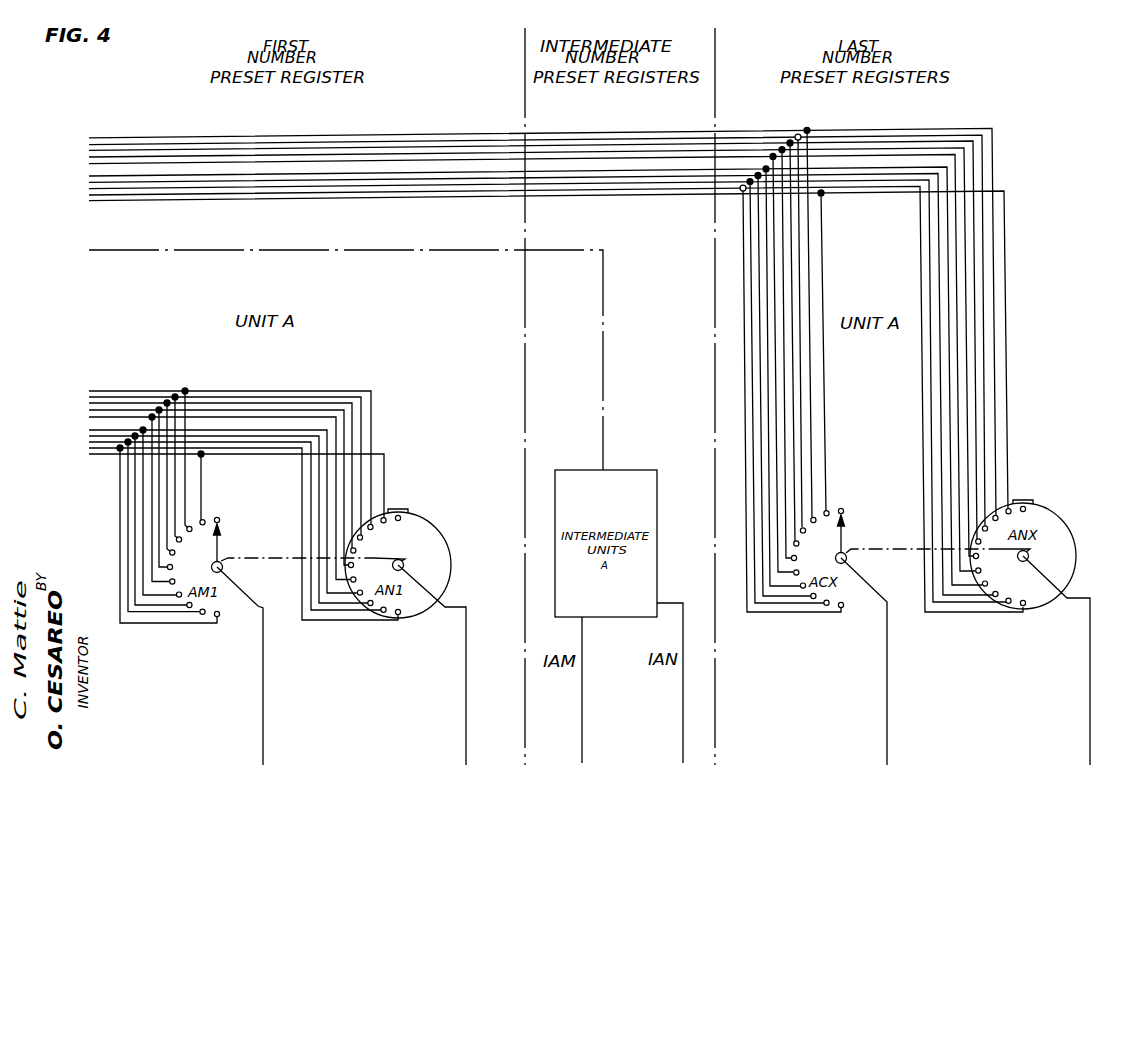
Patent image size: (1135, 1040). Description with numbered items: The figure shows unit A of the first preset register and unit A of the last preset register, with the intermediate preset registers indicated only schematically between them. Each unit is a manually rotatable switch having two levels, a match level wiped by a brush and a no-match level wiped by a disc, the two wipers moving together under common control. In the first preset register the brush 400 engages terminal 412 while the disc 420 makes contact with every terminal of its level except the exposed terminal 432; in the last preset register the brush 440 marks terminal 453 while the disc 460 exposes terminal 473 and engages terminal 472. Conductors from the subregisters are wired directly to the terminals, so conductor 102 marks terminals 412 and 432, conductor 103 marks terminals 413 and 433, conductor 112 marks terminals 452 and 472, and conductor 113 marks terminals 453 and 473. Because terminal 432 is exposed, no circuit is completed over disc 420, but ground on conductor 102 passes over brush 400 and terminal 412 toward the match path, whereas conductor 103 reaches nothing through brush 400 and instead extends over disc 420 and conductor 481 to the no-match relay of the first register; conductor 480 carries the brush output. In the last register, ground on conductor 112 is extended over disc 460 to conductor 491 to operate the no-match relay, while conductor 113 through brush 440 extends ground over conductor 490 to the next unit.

The conductor 112 is at (130, 146).
The conductor 113 is at (203, 150).
The conductor 102 is at (137, 399).
The conductor 103 is at (270, 404).
The brush 400 is at (221, 547).
The terminal 412 is at (180, 542).
The terminal 413 is at (173, 556).
The disc 420 is at (444, 538).
The terminal 432 is at (364, 539).
The terminal 433 is at (357, 553).
The brush 440 is at (846, 538).
The terminal 452 is at (803, 533).
The terminal 453 is at (797, 549).
The disc 460 is at (1070, 531).
The terminal 472 is at (981, 545).
The terminal 473 is at (981, 567).
The conductor 480 is at (263, 692).
The conductor 481 is at (466, 700).
The conductor 490 is at (888, 660).
The conductor 491 is at (1091, 682).